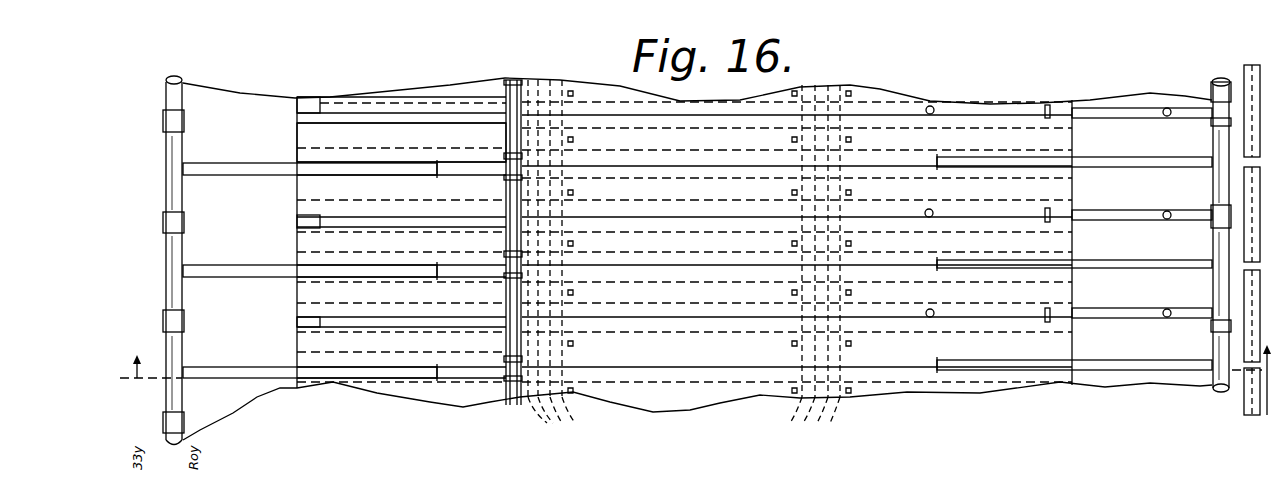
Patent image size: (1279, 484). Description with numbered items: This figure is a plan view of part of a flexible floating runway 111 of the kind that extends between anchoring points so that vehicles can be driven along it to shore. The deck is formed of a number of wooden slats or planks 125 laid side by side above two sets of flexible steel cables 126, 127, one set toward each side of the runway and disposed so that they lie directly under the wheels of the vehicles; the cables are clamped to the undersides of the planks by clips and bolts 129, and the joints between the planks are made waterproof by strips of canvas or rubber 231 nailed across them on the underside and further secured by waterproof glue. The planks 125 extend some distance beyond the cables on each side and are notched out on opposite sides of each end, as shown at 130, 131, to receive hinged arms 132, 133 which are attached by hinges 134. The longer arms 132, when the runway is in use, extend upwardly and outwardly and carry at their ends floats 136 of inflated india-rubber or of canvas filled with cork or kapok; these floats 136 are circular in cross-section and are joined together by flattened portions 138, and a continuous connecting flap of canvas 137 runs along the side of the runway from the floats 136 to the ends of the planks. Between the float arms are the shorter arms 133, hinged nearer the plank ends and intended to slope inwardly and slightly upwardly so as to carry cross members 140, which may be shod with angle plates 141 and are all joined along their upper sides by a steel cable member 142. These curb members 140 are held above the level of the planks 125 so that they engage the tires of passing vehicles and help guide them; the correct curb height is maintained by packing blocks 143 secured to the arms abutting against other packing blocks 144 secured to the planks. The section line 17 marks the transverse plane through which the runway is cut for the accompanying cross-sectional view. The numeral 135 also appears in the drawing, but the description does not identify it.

The section line 17- 17 is at (694, 401).
The runway 111 is at (724, 256).
The wooden slats or planks 125 is at (650, 190).
The flexible steel cable 126 is at (557, 263).
The flexible steel cable 127 is at (805, 266).
The bolts 129 is at (575, 343).
The notch 130 is at (343, 176).
The notch 131 is at (297, 320).
The hinged arms 132 is at (243, 178).
The hinged arms 133 is at (400, 115).
The hinges 134 is at (437, 367).
The bracket 135 is at (316, 110).
The floats 136 is at (166, 194).
The connecting flap of canvas 137 is at (227, 98).
The flattened portions 138 is at (163, 125).
The cross members 140 is at (520, 349).
The angle plates 141 is at (523, 208).
The steel cable member 142 is at (504, 79).
The packing blocks 143 is at (1167, 108).
The packing blocks 144 is at (931, 106).
The strips of canvas or rubber 231 is at (773, 160).